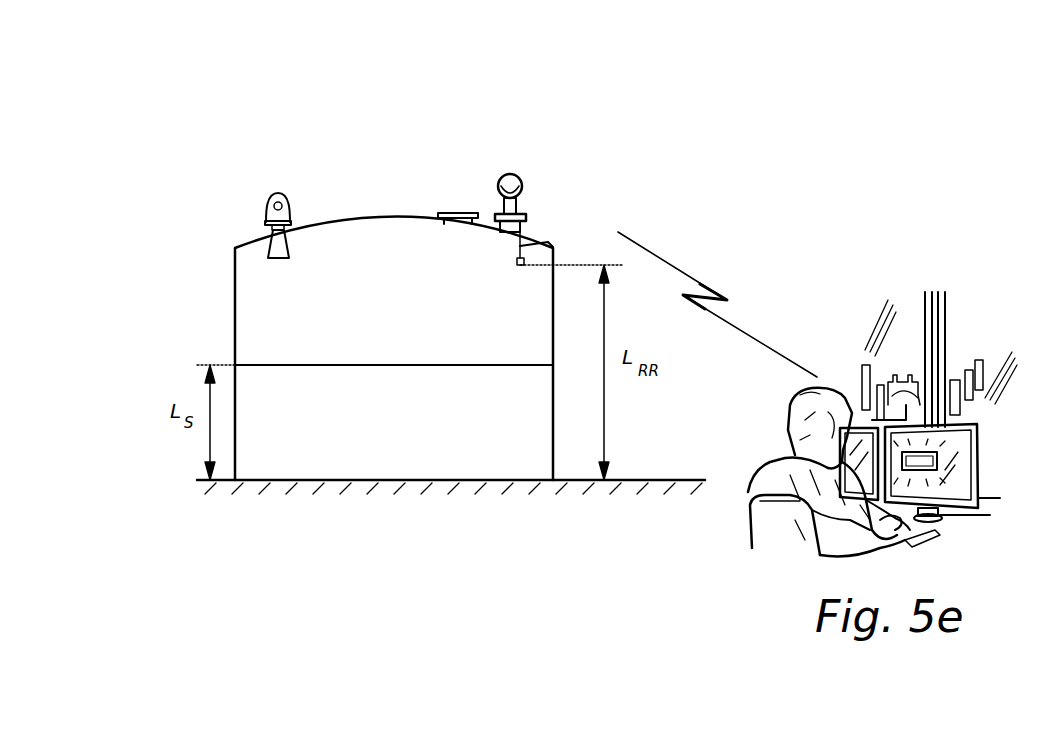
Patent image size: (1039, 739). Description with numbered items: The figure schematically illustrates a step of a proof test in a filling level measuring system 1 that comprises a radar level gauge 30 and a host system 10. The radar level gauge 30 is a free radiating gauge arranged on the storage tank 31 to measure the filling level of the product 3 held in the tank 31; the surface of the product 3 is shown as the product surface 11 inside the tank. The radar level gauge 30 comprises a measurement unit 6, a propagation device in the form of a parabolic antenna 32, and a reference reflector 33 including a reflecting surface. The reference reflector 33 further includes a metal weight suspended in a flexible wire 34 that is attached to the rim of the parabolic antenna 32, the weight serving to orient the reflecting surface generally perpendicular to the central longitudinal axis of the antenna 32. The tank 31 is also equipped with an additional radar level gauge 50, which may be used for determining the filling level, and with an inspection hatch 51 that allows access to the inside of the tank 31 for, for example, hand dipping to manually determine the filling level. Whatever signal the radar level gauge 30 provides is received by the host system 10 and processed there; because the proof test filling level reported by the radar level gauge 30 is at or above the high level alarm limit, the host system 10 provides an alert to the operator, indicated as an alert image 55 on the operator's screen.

The filling level measuring system 1 is at (706, 93).
The product 3 is at (410, 451).
The measurement unit 6 is at (513, 180).
The host system 10 is at (821, 228).
The product surface 11 is at (362, 365).
The radar level gauge 30 is at (495, 146).
The storage tank 31 is at (235, 312).
The parabolic antenna 32 is at (527, 230).
The reference reflector 33 is at (517, 265).
The flexible wire 34 is at (546, 243).
The additional radar level gauge 50 is at (302, 176).
The inspection hatch 51 is at (445, 213).
The alert image 55 is at (917, 455).